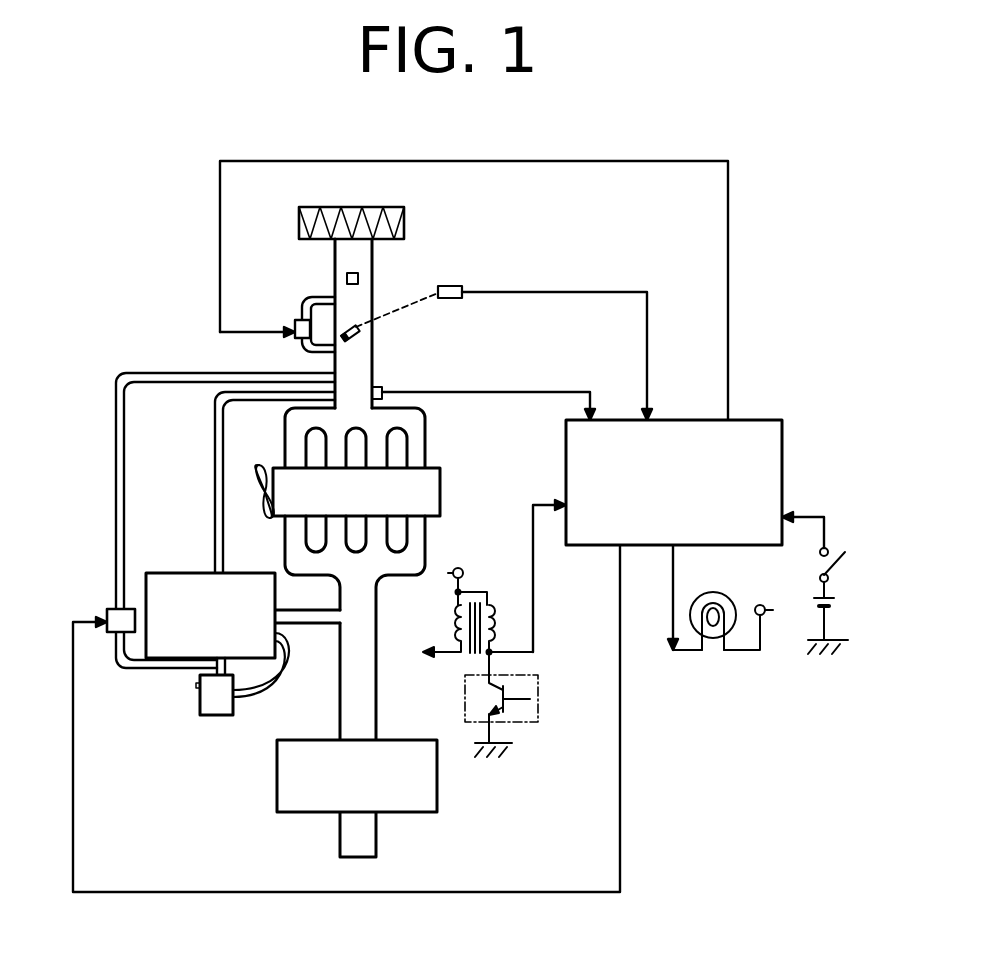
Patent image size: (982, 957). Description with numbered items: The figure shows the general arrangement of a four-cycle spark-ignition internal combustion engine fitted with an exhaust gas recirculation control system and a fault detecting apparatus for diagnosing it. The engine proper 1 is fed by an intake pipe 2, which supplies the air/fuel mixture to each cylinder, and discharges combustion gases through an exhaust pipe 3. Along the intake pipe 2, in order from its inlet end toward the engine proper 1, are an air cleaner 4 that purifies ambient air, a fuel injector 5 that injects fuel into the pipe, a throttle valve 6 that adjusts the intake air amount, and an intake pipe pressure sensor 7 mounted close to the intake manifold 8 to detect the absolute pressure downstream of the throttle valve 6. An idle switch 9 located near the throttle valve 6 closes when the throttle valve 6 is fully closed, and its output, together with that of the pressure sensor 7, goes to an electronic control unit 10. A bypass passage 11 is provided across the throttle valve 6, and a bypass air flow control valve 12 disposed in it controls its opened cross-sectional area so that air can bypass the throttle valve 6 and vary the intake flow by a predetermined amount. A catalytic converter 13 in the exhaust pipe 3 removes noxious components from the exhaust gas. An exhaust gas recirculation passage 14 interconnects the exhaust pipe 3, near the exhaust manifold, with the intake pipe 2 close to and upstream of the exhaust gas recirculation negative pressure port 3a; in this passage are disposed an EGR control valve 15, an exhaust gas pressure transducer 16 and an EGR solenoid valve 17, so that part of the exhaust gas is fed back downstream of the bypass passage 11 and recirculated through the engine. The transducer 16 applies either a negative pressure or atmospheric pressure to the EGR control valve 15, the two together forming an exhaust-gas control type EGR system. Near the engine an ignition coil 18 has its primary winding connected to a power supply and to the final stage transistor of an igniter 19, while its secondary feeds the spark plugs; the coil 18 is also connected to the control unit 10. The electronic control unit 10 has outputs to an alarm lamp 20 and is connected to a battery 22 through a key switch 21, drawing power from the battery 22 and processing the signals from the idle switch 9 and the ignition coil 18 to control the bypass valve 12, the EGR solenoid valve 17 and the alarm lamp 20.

The engine proper 1 is at (440, 488).
The intake pipe 2 is at (335, 262).
The exhaust pipe 3 is at (376, 716).
The exhaust gas recirculation negative pressure port 3a is at (293, 482).
The air cleaner 4 is at (404, 220).
The fuel injector 5 is at (358, 278).
The throttle valve 6 is at (362, 343).
The intake pipe pressure sensor 7 is at (378, 387).
The intake manifold 8 is at (425, 420).
The idle switch 9 is at (450, 286).
The electronic control unit 10 is at (740, 420).
The bypass passage 11 is at (305, 348).
The bypass air flow control valve 12 is at (300, 320).
The catalytic converter 13 is at (437, 768).
The exhaust gas recirculation passage 14 is at (106, 502).
The exhaust gas recirculation control valve 15 is at (185, 573).
The exhaust gas pressure transducer 16 is at (233, 700).
The exhaust gas recirculation solenoid valve 17 is at (108, 609).
The ignition coil 18 is at (455, 625).
The igniter 19 is at (538, 688).
The alarm lamp 20 is at (713, 652).
The key switch 21 is at (820, 563).
The battery 22 is at (835, 602).